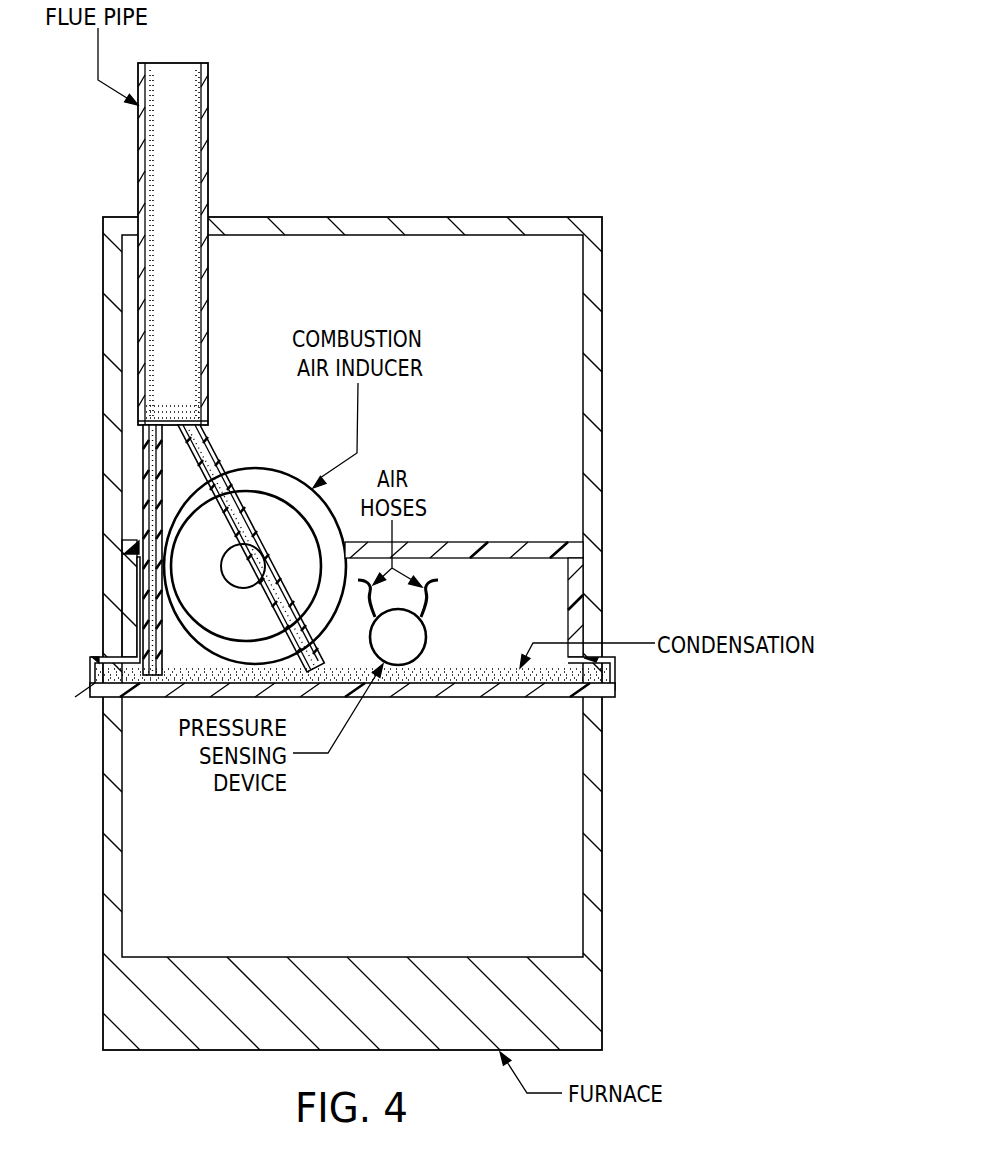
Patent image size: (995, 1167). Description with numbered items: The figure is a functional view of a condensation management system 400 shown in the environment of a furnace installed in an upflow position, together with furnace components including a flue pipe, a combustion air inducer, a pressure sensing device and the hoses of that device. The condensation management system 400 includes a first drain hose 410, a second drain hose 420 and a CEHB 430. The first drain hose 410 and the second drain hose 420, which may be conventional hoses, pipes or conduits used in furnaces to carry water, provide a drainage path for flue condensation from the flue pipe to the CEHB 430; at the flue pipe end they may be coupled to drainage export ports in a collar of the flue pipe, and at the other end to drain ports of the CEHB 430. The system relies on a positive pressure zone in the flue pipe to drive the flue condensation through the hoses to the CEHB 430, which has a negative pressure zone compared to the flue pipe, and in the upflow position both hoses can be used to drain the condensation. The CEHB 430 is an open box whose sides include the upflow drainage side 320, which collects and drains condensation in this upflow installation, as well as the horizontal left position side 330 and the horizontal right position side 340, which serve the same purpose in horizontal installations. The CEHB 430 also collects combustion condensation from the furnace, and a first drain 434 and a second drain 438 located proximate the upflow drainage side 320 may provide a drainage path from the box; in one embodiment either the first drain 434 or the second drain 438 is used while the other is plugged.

The condensation management system 400 is at (502, 122).
The first drain hose 410 is at (143, 461).
The second drain hose 420 is at (216, 455).
The CEHB 430 is at (524, 532).
The horizontal right position side 340 is at (585, 568).
The horizontal left position side 330 is at (122, 572).
The first drain 434 is at (89, 680).
The second drain 438 is at (616, 679).
The upflow drainage side 320 is at (447, 698).